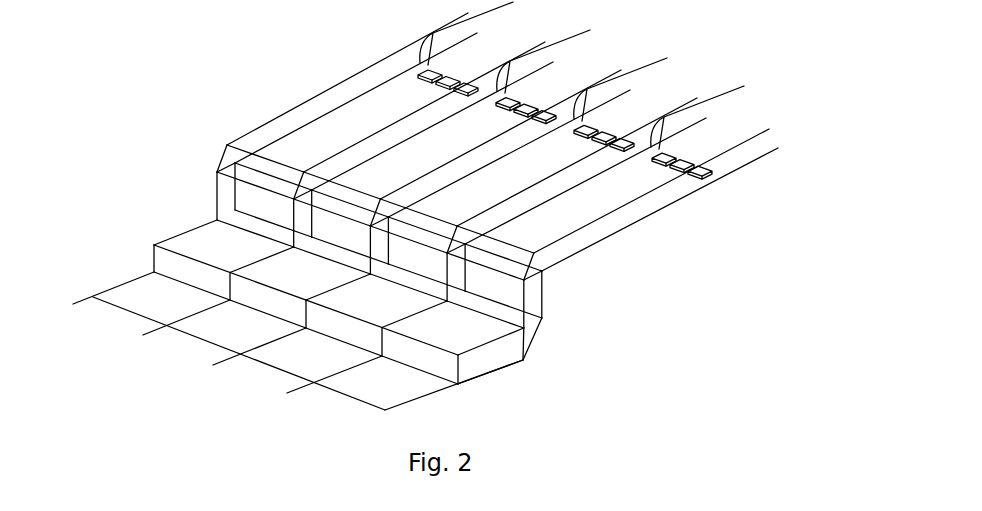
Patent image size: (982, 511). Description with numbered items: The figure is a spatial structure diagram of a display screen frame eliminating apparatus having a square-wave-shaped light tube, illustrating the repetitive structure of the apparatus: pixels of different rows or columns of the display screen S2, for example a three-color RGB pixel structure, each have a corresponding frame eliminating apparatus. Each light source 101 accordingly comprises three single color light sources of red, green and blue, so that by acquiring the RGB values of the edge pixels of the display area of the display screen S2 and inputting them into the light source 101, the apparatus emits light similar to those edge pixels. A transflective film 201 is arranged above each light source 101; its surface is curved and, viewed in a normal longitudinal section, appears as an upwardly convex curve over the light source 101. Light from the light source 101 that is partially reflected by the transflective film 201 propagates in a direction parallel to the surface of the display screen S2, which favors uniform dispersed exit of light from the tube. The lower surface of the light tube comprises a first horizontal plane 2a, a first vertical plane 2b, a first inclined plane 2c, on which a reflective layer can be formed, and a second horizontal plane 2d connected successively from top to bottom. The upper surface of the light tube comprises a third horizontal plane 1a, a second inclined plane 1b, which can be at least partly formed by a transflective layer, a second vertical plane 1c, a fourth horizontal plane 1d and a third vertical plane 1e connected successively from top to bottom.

The third horizontal plane 1a is at (484, 133).
The second inclined plane 1b is at (330, 199).
The second vertical plane 1c is at (331, 245).
The fourth horizontal plane 1d is at (311, 280).
The third vertical plane 1e is at (271, 314).
The first horizontal plane 2a is at (506, 152).
The first vertical plane 2b is at (565, 299).
The first inclined plane 2c is at (564, 339).
The second horizontal plane 2d is at (481, 385).
The display screen S2 is at (229, 341).
The transflective film 201 is at (489, 98).
The light source 101 is at (618, 92).